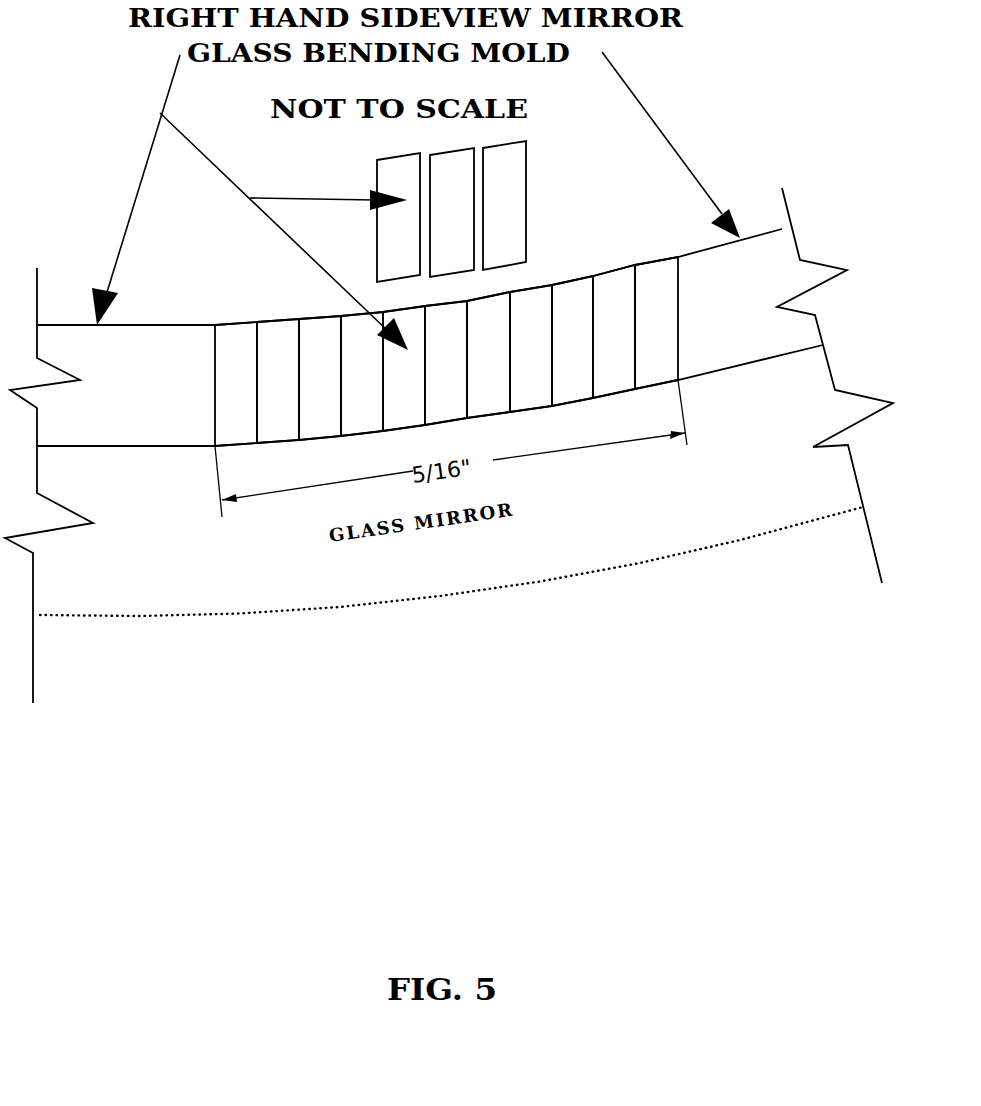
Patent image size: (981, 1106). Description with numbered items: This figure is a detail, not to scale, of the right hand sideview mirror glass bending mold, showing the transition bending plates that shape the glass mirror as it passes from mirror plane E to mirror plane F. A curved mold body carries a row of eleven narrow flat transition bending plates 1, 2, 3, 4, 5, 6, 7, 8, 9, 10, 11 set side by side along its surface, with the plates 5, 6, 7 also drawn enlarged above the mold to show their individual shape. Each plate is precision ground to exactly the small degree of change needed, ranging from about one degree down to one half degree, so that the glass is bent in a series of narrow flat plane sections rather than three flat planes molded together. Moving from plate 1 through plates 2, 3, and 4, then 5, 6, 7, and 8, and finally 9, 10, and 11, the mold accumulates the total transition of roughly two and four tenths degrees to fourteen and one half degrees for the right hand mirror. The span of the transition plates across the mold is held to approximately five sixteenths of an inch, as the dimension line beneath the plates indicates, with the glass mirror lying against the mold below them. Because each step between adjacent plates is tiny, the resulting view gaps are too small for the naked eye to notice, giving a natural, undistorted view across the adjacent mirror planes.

The transition bending plate 1 is at (236, 384).
The transition bending plate 2 is at (278, 381).
The transition bending plate 3 is at (320, 378).
The transition bending plate 4 is at (362, 374).
The transition bending plate 5 is at (401, 292).
The transition bending plate 6 is at (449, 286).
The transition bending plate 7 is at (496, 279).
The transition bending plate 8 is at (531, 348).
The transition bending plate 9 is at (572, 341).
The transition bending plate 10 is at (614, 331).
The transition bending plate 11 is at (656, 323).